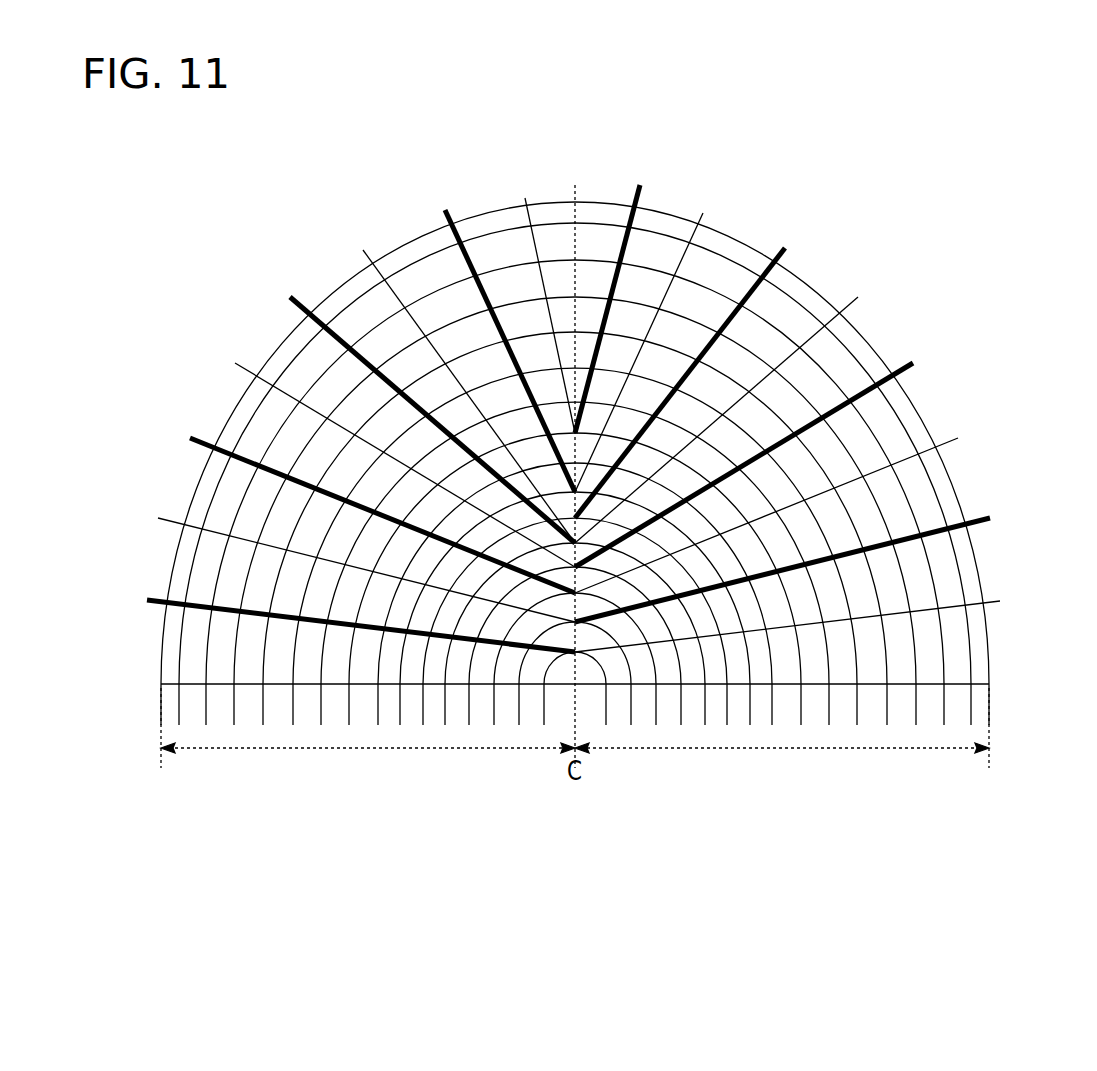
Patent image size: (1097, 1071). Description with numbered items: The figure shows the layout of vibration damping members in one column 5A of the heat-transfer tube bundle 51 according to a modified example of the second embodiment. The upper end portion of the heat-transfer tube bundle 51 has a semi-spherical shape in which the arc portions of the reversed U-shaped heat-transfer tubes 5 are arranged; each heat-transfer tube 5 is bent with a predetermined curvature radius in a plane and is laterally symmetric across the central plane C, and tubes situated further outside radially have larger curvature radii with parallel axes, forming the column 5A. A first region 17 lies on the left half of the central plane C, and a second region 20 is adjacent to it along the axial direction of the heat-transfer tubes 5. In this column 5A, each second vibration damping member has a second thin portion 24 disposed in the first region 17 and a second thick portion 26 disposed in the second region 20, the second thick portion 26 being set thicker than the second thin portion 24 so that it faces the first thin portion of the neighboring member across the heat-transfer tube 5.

The heat-transfer tube 5 is at (938, 597).
The column 5A is at (870, 207).
The second thin portion 24 is at (523, 198).
The second thick portion 26 is at (444, 210).
The heat-transfer tube bundle 51 is at (128, 684).
The first region 17 is at (368, 738).
The second region 20 is at (782, 738).